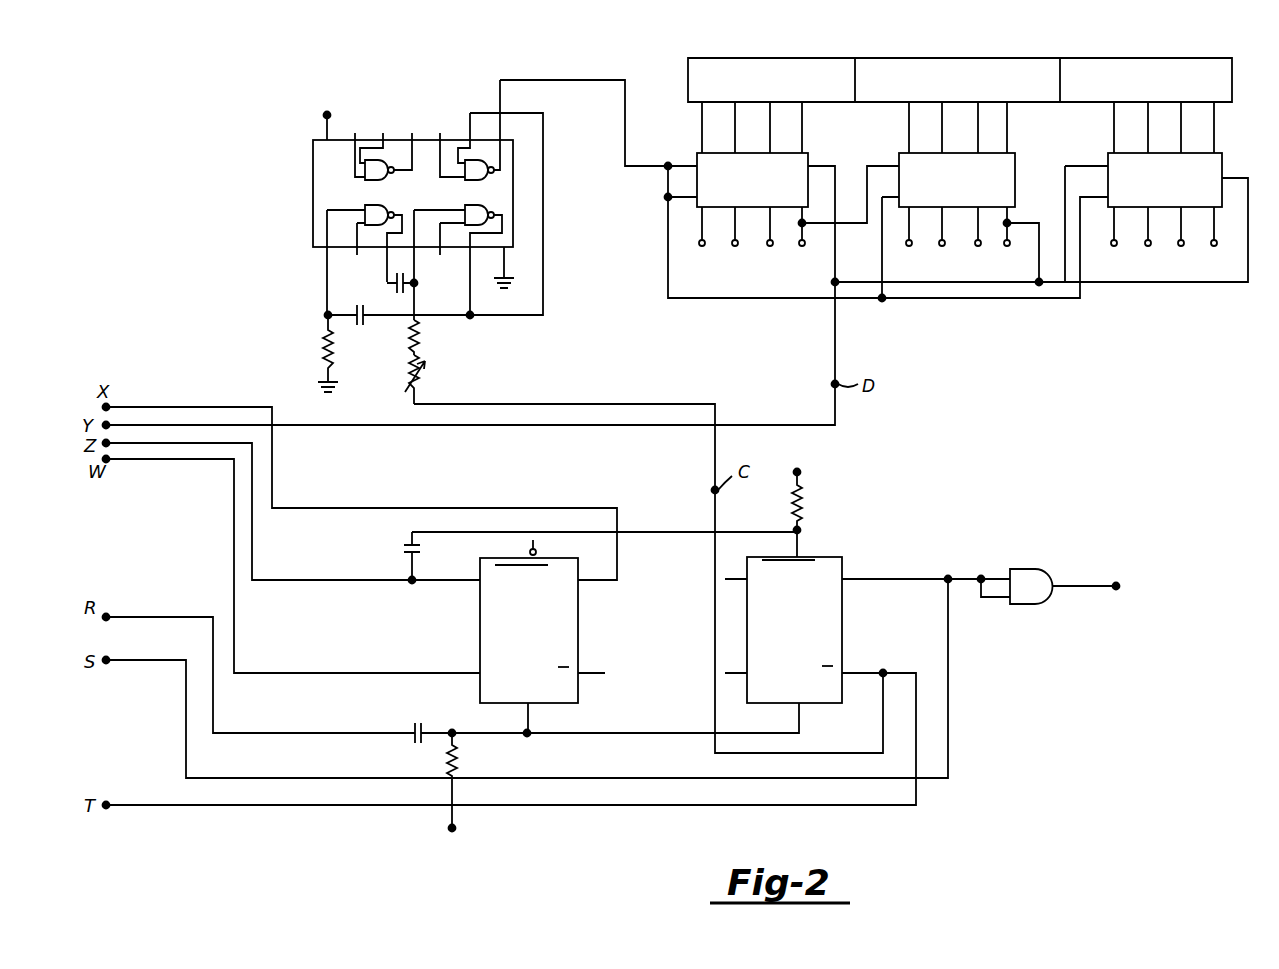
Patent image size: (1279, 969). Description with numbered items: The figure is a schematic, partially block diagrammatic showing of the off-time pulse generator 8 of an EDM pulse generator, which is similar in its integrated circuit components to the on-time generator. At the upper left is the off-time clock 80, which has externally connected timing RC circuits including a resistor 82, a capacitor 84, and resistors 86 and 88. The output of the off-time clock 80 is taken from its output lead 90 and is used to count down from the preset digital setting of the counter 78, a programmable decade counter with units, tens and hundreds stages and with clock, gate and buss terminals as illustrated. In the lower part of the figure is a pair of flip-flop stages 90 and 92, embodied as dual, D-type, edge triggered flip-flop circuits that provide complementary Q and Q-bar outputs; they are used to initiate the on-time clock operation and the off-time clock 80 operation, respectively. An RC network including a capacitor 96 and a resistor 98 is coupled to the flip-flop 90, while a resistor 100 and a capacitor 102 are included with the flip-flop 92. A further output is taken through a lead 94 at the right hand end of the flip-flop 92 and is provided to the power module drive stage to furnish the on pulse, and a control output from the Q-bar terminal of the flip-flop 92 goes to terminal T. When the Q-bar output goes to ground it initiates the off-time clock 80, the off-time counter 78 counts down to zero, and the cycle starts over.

The off-time pulse generator 8 is at (700, 356).
The counter 78 is at (1024, 317).
The off-time clock 80 is at (492, 327).
The resistor 82 is at (318, 350).
The capacitor 84 is at (390, 290).
The resistor 86 is at (409, 340).
The resistor 88 is at (425, 372).
The flip-flop 90 is at (541, 80).
The flip-flop 92 is at (806, 603).
The lead 94 is at (963, 577).
The capacitor 96 is at (423, 730).
The resistor 98 is at (462, 758).
The resistor 100 is at (805, 496).
The capacitor 102 is at (407, 550).